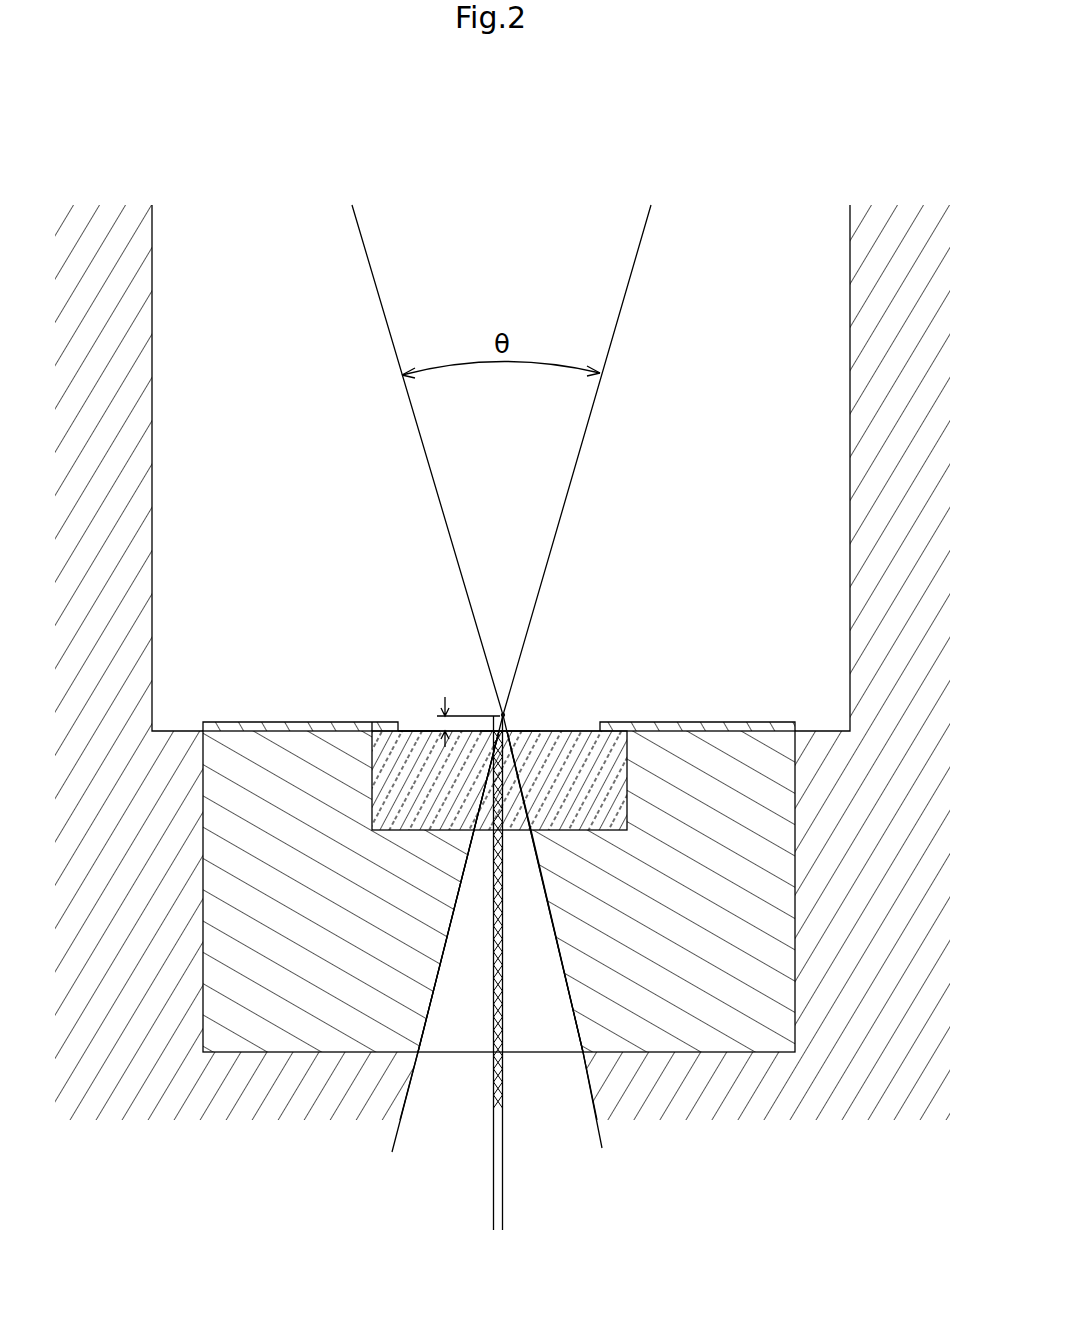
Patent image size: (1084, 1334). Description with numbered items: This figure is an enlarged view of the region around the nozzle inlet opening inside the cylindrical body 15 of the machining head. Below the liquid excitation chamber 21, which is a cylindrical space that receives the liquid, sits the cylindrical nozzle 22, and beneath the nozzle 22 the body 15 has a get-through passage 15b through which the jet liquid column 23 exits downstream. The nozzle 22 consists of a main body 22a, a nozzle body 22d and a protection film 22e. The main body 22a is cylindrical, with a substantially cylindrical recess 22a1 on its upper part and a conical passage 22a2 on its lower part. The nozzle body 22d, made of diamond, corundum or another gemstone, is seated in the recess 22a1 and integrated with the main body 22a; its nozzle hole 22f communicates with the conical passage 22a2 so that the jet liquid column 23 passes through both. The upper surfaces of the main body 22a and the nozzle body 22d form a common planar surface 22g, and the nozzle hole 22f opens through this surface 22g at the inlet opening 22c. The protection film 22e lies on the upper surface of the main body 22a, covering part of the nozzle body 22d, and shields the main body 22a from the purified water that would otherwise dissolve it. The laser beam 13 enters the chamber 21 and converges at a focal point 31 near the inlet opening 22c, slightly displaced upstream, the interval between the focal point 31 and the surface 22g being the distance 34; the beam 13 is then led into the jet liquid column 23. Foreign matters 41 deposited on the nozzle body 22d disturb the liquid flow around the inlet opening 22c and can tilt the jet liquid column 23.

The laser beam 13 is at (388, 334).
The cylindrical body 15 is at (803, 1120).
The get-through passage 15b is at (410, 1090).
The liquid excitation chamber 21 is at (242, 563).
The nozzle 22 is at (700, 717).
The main body 22a is at (398, 1053).
The recess 22a1 is at (334, 731).
The conical passage 22a2 is at (568, 1000).
The inlet opening 22c is at (508, 728).
The nozzle body 22d is at (372, 731).
The protection film 22e is at (252, 722).
The nozzle hole 22f is at (468, 705).
The surface 22g is at (414, 731).
The jet liquid column 23 is at (503, 1206).
The focal point 31 is at (503, 720).
The distance 34 is at (441, 738).
The foreign matters 41 is at (522, 731).